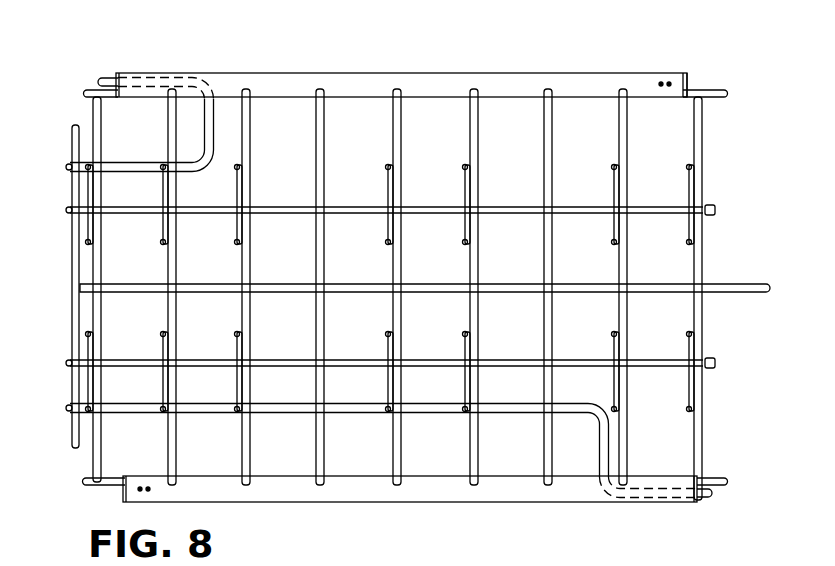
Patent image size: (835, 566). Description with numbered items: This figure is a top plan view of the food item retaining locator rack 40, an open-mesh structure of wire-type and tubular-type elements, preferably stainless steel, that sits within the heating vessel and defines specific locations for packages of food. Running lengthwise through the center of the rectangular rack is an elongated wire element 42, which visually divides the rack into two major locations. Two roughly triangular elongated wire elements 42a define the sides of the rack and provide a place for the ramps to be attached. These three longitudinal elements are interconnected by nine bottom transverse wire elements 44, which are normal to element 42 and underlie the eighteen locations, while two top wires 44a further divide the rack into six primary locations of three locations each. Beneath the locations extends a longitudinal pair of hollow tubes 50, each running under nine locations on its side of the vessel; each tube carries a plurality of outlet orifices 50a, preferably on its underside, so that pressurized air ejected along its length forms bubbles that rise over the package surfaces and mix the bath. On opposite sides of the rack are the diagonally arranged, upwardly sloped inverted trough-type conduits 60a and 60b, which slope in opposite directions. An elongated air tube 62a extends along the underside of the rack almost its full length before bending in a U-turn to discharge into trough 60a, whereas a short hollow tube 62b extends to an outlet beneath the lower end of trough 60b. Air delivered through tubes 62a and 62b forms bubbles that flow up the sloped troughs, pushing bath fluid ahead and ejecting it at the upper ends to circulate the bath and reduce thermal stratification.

The locator rack 40 is at (695, 86).
The elongated wire element 42 is at (750, 284).
The triangular elongated wire elements 42a is at (720, 98).
The bottom transverse wire elements 44 is at (748, 235).
The top wires 44a is at (537, 123).
The tubes 50 is at (425, 207).
The outlet orifices 50a is at (575, 207).
The inverted trough-type conduit 60a is at (423, 492).
The inverted trough-type conduit 60b is at (437, 82).
The elongated air tube 62a is at (342, 414).
The short hollow tube 62b is at (207, 137).